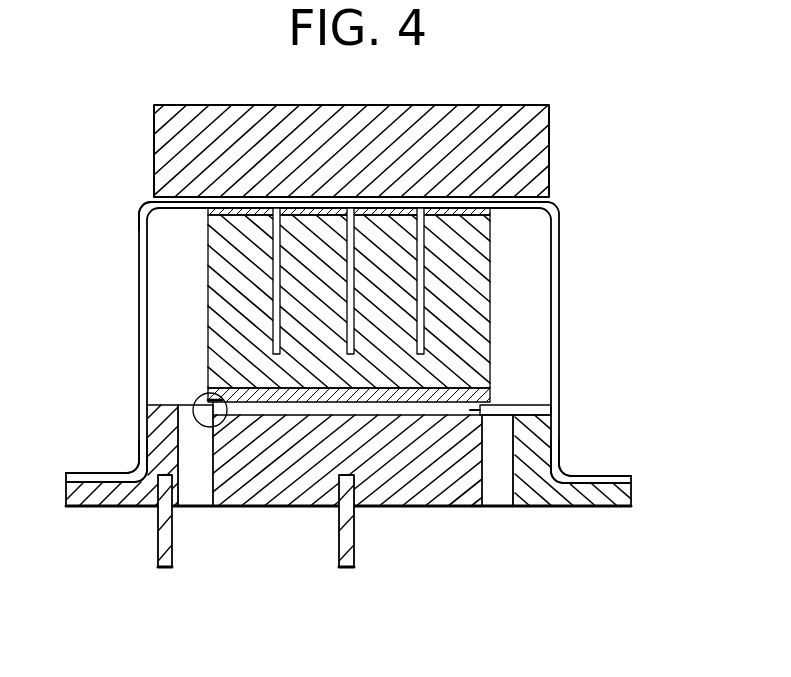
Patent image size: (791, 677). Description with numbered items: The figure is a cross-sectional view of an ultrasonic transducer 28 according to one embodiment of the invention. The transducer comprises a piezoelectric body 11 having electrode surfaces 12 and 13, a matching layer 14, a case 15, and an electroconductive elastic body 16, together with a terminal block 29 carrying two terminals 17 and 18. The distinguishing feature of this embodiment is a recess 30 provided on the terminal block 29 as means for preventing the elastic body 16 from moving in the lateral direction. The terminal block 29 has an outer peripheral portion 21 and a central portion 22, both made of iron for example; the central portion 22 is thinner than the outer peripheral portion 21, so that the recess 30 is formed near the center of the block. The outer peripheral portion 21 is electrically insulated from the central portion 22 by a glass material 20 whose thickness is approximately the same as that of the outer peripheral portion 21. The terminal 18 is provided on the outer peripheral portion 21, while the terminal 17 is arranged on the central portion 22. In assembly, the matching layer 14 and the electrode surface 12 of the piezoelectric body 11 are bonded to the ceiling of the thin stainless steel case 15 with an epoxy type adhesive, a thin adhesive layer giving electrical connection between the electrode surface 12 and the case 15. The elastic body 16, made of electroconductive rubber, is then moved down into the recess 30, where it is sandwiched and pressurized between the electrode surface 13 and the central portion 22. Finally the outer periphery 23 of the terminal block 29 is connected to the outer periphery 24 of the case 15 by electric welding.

The piezoelectric body 11 is at (470, 297).
The electrode surface 12 is at (470, 211).
The electrode surface 13 is at (500, 398).
The matching layer 14 is at (530, 158).
The case 15 is at (563, 260).
The electroconductive elastic body 16 is at (483, 413).
The terminal 17 is at (347, 568).
The terminal 18 is at (160, 568).
The glass material 20 is at (205, 492).
The outer peripheral portion 21 is at (553, 492).
The central portion 22 is at (270, 492).
The outer periphery of the terminal block 23 is at (80, 507).
The outer periphery of the case 24 is at (93, 471).
The ultrasonic transducer 28 is at (141, 203).
The terminal block 29 is at (631, 497).
The recess 30 is at (200, 397).